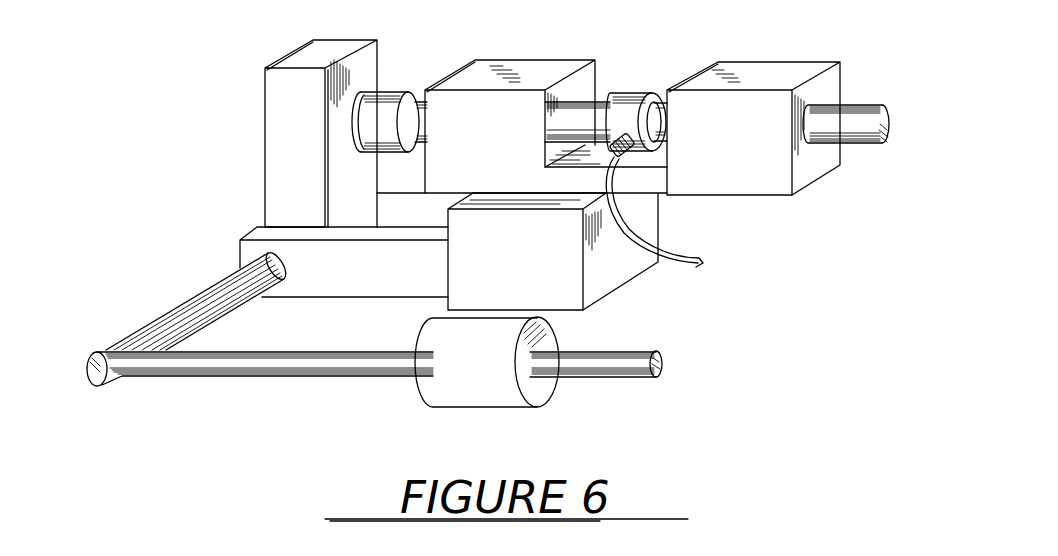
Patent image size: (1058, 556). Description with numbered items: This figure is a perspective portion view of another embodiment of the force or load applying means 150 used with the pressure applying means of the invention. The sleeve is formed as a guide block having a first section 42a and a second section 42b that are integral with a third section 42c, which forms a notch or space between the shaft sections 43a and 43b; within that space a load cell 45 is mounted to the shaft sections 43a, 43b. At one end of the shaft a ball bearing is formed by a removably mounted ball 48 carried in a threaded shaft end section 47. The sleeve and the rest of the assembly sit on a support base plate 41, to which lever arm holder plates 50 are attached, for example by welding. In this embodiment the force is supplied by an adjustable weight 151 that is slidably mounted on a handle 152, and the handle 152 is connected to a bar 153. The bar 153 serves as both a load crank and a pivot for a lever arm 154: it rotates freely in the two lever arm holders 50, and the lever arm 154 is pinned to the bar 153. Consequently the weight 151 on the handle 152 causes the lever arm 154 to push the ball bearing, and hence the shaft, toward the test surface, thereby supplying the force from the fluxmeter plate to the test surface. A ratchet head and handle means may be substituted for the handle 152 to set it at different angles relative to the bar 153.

The force or load applying means 150 is at (742, 29).
The lever arm 154 is at (274, 119).
The ball 48 is at (354, 110).
The threaded shaft end section 47 is at (385, 113).
The shaft section 43a is at (416, 113).
The first section of the sleeve 42a is at (563, 33).
The load cell 45 is at (637, 96).
The second section of the sleeve 42b is at (791, 81).
The shaft section 43b is at (868, 107).
The third section of the sleeve 42c is at (654, 162).
The lever arm holder plates 50 is at (398, 204).
The support base plate 41 is at (622, 272).
The adjustable weight 151 is at (500, 392).
The handle 152 is at (322, 370).
The bar 153 is at (200, 290).